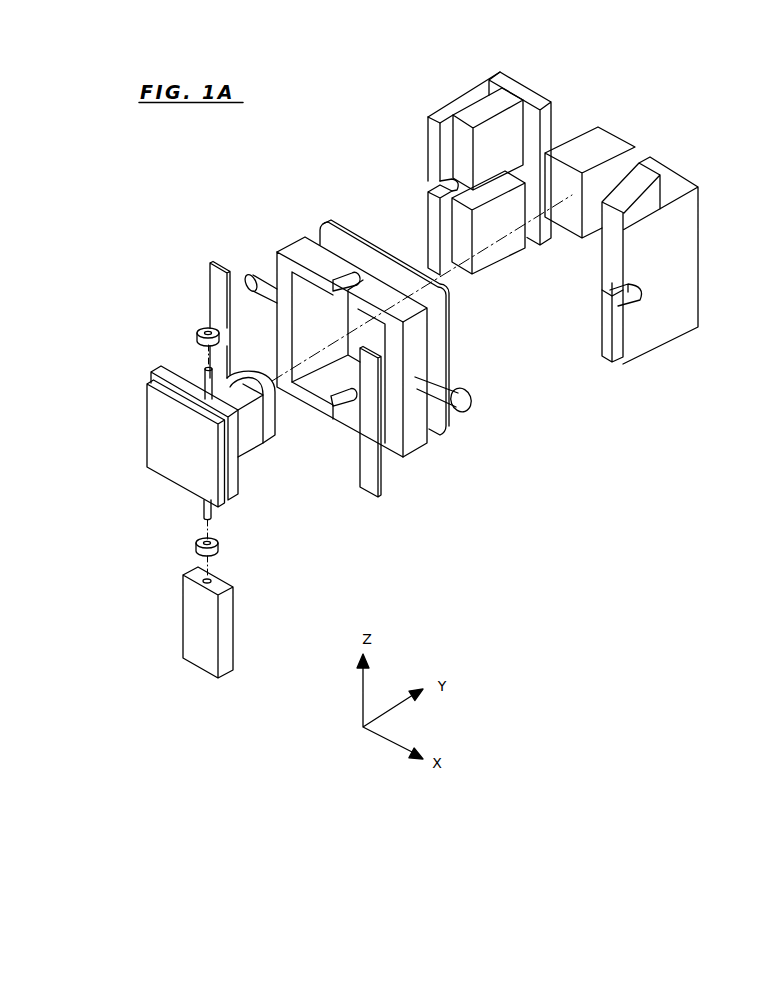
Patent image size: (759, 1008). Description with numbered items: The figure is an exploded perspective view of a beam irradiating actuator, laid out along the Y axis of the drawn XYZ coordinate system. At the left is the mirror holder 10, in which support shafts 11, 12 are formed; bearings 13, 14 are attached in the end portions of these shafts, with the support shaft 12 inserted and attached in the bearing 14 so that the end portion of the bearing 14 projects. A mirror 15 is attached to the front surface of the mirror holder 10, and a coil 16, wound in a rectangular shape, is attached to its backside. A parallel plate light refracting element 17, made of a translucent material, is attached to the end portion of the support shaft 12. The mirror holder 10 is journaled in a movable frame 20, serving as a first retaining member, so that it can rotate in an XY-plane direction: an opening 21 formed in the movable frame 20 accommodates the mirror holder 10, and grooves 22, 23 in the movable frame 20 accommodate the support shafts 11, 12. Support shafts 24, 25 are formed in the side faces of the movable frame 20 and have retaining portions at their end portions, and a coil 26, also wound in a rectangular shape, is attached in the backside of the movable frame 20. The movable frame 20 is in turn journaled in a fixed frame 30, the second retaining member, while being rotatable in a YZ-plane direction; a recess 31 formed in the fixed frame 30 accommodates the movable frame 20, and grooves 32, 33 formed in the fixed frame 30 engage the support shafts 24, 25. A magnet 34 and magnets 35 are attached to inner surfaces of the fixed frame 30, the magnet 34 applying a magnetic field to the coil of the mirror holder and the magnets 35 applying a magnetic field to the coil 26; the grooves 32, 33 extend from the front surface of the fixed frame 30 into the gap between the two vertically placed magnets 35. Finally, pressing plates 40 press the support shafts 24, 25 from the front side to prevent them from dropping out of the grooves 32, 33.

The mirror holder 10 is at (236, 444).
The support shaft 11 is at (200, 365).
The support shaft 12 is at (200, 509).
The bearing 13 is at (197, 324).
The bearing 14 is at (219, 554).
The mirror 15 is at (170, 456).
The coil 16 is at (237, 377).
The parallel plate light refracting element 17 is at (198, 653).
The movable frame 20 is at (365, 355).
The opening 21 is at (310, 298).
The groove 22 is at (357, 270).
The groove 23 is at (340, 418).
The support shaft 24 is at (258, 282).
The support shaft 25 is at (464, 412).
The coil 26 is at (438, 352).
The fixed frame 30 is at (553, 286).
The recess 31 is at (553, 303).
The groove 32 is at (430, 178).
The groove 33 is at (638, 286).
The magnet 34 is at (607, 178).
The magnet 35 is at (485, 192).
The pressing plate 40 is at (212, 262).